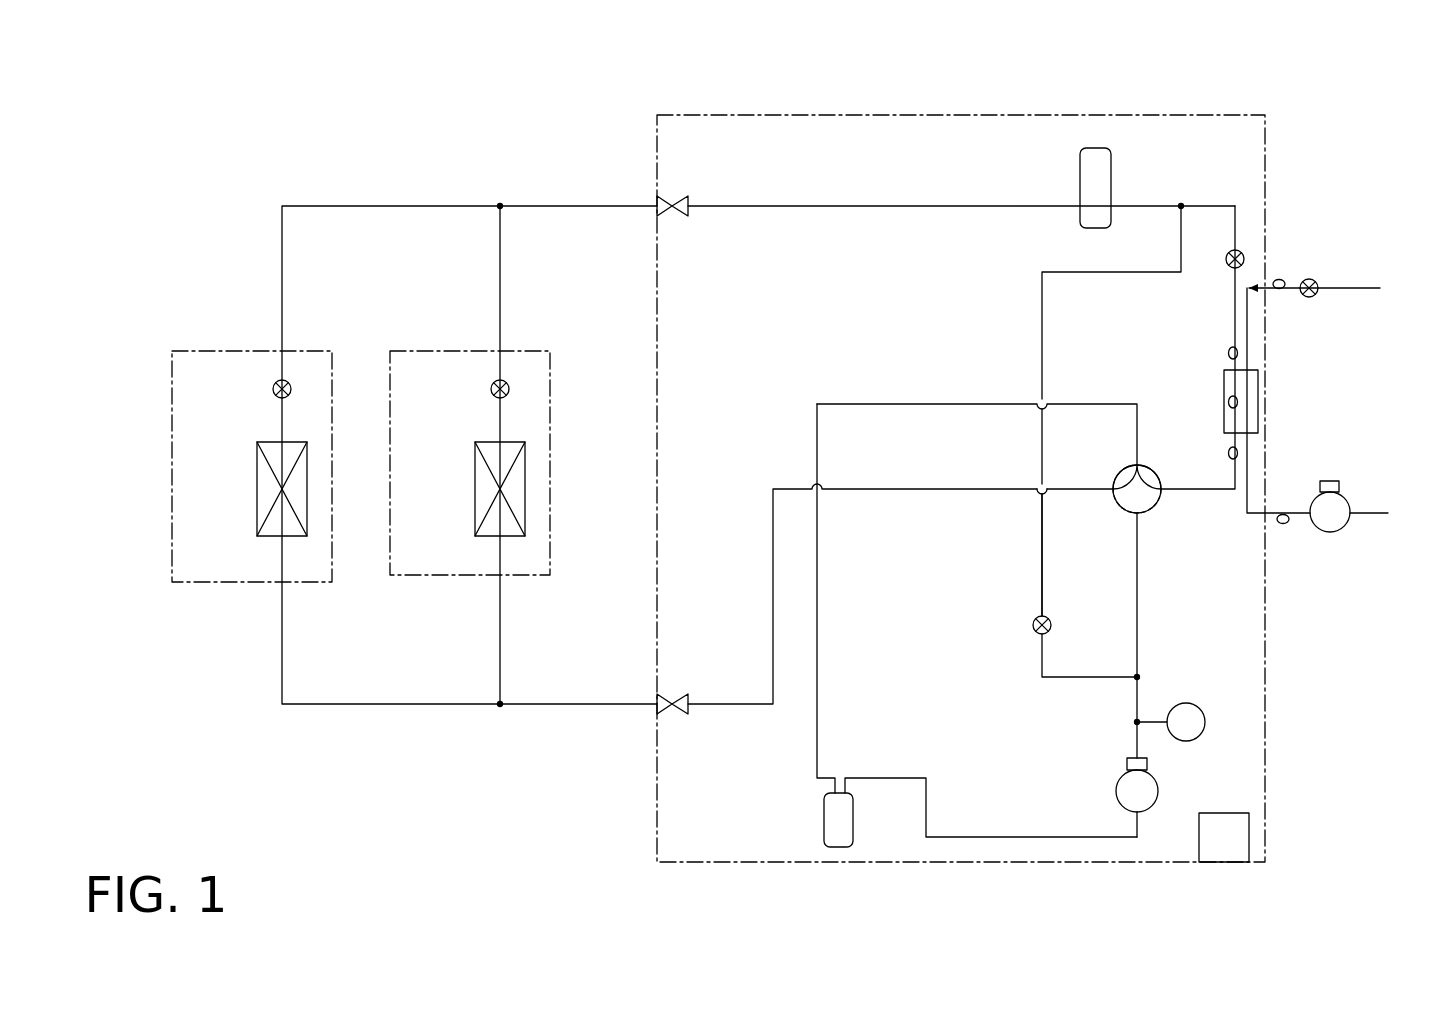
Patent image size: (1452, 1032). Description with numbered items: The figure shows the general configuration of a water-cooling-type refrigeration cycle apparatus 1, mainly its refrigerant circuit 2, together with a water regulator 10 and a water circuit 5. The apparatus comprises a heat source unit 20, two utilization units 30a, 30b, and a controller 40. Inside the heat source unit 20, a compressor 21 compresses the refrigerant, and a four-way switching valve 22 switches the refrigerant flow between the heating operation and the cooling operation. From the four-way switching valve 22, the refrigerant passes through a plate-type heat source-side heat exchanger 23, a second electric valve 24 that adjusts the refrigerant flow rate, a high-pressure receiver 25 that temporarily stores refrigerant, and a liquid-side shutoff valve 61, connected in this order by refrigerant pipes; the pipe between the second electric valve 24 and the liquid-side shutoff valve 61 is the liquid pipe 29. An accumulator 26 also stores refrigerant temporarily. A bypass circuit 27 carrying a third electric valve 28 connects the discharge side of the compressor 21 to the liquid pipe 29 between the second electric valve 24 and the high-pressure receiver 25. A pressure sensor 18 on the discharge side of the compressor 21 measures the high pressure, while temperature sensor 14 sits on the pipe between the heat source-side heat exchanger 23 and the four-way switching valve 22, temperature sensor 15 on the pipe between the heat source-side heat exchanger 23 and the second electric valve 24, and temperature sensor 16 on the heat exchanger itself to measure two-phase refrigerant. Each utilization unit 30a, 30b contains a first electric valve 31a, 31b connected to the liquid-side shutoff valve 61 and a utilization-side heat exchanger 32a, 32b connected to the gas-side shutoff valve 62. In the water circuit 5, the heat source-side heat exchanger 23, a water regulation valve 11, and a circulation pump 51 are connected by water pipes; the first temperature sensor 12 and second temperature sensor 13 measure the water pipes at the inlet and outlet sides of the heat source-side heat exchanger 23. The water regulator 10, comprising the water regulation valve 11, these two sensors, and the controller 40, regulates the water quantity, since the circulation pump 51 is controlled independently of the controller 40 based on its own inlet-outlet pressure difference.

The refrigeration cycle apparatus 1 is at (1279, 96).
The refrigerant circuit 2 is at (581, 193).
The water circuit 5 is at (1381, 283).
The water regulator 10 is at (1250, 774).
The water regulation valve 11 is at (1314, 281).
The first temperature sensor 12 is at (1284, 280).
The second temperature sensor 13 is at (1283, 524).
The temperature sensor 14 is at (1228, 454).
The temperature sensor 15 is at (1228, 353).
The temperature sensor 16 is at (1228, 403).
The pressure sensor 18 is at (1187, 702).
The heat source unit 20 is at (1166, 111).
The compressor 21 is at (1116, 791).
The four-way switching valve 22 is at (1155, 506).
The heat source-side heat exchanger 23 is at (1230, 387).
The second electric valve 24 is at (1245, 260).
The high-pressure receiver 25 is at (1112, 162).
The accumulator 26 is at (823, 819).
The bypass circuit 27 is at (1040, 578).
The third electric valve 28 is at (1033, 630).
The liquid pipe 29 is at (866, 208).
The utilization unit 30a is at (227, 350).
The utilization unit 30b is at (453, 350).
The first electric valve 31a is at (272, 391).
The first electric valve 31b is at (490, 391).
The utilization-side heat exchanger 32a is at (308, 488).
The utilization-side heat exchanger 32b is at (526, 488).
The controller 40 is at (1225, 812).
The circulation pump 51 is at (1330, 533).
The liquid-side shutoff valve 61 is at (679, 215).
The gas-side shutoff valve 62 is at (680, 713).